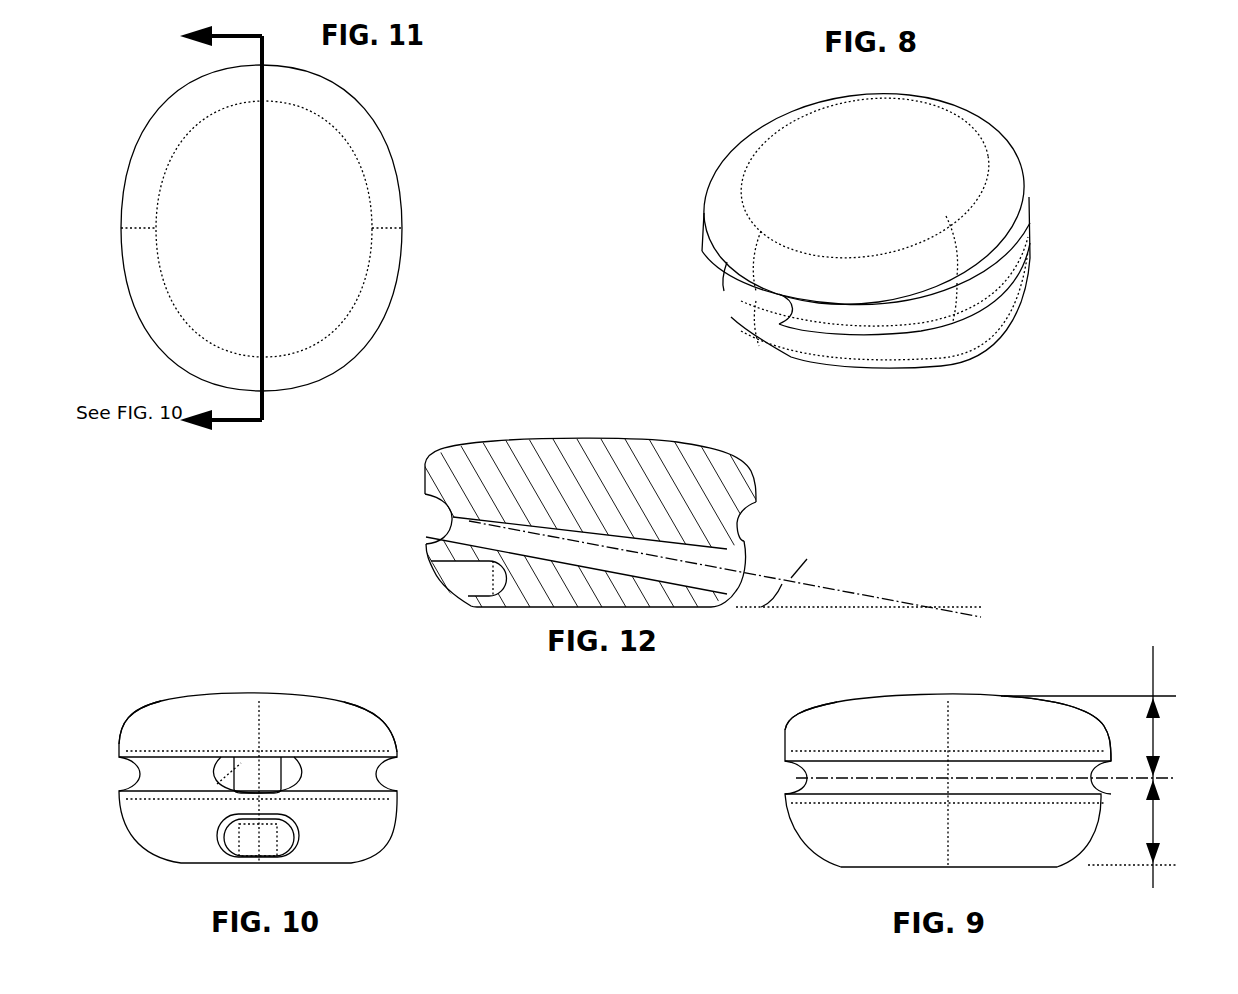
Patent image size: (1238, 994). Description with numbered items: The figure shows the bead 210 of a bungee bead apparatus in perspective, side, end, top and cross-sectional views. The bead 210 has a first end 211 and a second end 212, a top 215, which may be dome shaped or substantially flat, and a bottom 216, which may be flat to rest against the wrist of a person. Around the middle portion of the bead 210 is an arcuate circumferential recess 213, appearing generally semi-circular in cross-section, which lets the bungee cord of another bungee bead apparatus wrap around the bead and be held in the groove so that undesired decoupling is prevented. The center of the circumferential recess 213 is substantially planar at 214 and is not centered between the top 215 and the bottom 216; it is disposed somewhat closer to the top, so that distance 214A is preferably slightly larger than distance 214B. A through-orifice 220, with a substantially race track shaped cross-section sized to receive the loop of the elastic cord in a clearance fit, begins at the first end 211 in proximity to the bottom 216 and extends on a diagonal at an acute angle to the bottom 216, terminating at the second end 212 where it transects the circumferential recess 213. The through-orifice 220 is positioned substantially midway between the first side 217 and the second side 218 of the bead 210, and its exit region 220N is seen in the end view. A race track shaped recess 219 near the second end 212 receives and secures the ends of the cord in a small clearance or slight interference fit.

In FIG. 11, the bead 210 is at (398, 163).
In FIG. 8, the bead 210 is at (896, 220).
In FIG. 12, the bead 210 is at (647, 497).
In FIG. 10, the bead 210 is at (282, 770).
In FIG. 9, the bead 210 is at (949, 768).
In FIG. 12, the first end 211 is at (752, 465).
In FIG. 9, the first end 211 is at (1108, 730).
In FIG. 12, the second end 212 is at (426, 470).
In FIG. 9, the second end 212 is at (783, 730).
In FIG. 8, the circumferential recess 213 is at (995, 255).
In FIG. 12, the circumferential recess 213 is at (440, 515).
In FIG. 10, the circumferential recess 213 is at (122, 765).
In FIG. 9, the circumferential recess 213 is at (798, 770).
In FIG. 9, the center plane of the circumferential recess 214 is at (1005, 778).
In FIG. 9, the distance from bottom to recess center 214A is at (1156, 844).
In FIG. 9, the distance from top to recess center 214B is at (1159, 701).
In FIG. 9, the top 215 is at (1108, 698).
In FIG. 9, the bottom 216 is at (1151, 868).
In FIG. 10, the first side 217 is at (399, 725).
In FIG. 10, the second side 218 is at (118, 725).
In FIG. 12, the race track shaped recess 219 is at (469, 578).
In FIG. 10, the race track shaped recess 219 is at (303, 833).
In FIG. 12, the through-orifice 220 is at (628, 527).
In FIG. 10, the through-orifice 220 is at (197, 756).
In FIG. 10, the channel opening 220N is at (216, 783).